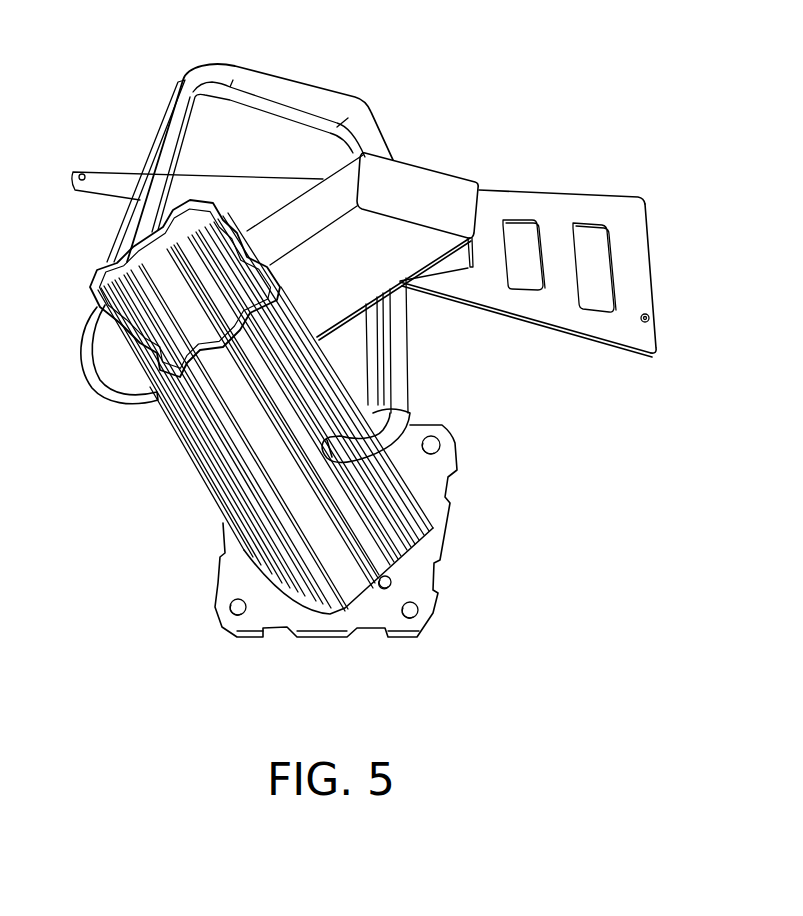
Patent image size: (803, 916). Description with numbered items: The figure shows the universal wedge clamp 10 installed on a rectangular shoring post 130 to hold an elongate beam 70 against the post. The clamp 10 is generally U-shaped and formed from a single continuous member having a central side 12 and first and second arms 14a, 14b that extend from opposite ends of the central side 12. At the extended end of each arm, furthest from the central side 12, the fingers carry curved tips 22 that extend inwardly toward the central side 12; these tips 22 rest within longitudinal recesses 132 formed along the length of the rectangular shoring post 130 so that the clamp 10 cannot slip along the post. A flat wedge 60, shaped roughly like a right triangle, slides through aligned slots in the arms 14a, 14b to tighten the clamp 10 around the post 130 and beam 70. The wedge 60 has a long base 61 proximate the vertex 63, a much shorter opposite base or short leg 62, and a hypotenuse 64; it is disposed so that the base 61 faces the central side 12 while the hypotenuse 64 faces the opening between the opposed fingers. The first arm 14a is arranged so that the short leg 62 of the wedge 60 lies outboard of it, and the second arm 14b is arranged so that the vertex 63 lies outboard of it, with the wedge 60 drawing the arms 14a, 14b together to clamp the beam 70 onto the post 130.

The clamp 10 is at (194, 77).
The central side 12 is at (290, 90).
The first arm 14a is at (400, 343).
The second arm 14b is at (167, 143).
The tip 22 is at (153, 408).
The wedge 60 is at (532, 202).
The base 61 is at (600, 190).
The short leg 62 is at (653, 257).
The vertex 63 is at (92, 190).
The hypotenuse 64 is at (550, 328).
The elongate beam 70 is at (420, 187).
The rectangular shoring post 130 is at (180, 445).
The longitudinal recess 132 is at (277, 367).